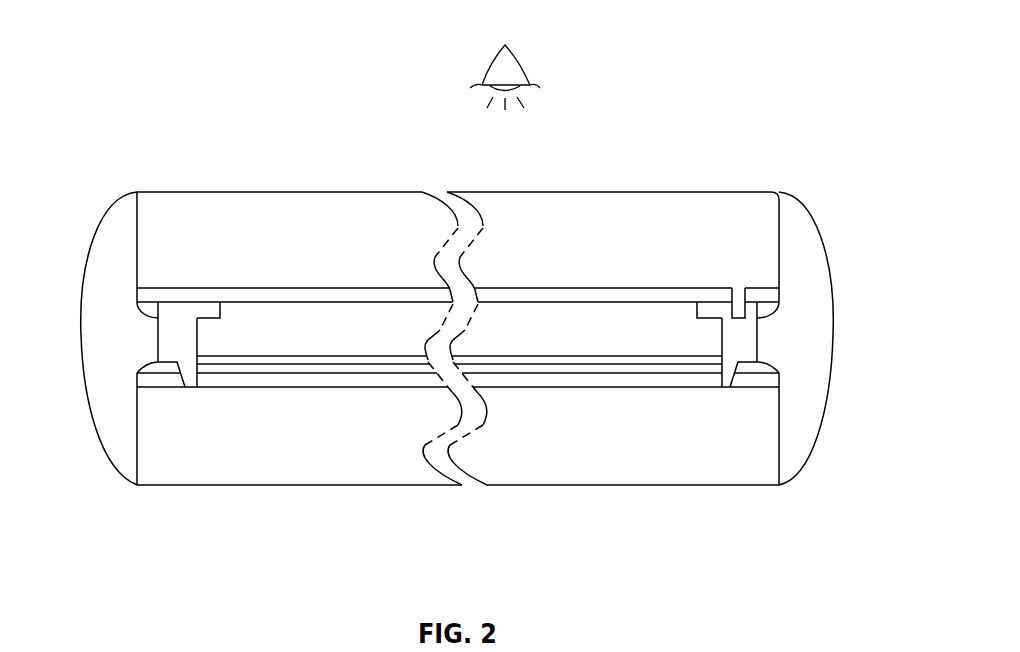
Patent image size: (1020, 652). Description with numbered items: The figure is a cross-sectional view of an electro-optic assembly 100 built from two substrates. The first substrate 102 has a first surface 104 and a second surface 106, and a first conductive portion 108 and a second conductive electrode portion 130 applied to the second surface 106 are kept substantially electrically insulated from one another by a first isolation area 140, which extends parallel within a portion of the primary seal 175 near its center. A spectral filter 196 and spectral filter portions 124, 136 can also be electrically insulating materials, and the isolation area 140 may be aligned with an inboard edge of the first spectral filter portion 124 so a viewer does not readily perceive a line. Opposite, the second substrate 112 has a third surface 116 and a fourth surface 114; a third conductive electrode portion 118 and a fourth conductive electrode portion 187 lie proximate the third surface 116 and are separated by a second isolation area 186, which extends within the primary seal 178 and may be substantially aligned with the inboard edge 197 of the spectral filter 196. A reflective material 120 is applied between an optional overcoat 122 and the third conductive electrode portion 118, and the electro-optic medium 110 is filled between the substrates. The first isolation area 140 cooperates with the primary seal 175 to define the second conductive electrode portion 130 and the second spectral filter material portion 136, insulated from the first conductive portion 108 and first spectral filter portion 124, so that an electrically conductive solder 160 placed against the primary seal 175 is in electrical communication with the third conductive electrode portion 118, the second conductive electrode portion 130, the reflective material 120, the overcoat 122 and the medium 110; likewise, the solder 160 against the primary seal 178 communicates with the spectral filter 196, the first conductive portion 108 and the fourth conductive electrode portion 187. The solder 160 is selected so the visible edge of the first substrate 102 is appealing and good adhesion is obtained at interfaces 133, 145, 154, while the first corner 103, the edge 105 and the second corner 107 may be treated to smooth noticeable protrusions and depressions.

The electro-optic assembly 100 is at (176, 79).
The first substrate 102 is at (611, 263).
The first corner 103 is at (137, 192).
The first surface 104 is at (556, 192).
The edge 105 is at (137, 242).
The second surface 106 is at (516, 288).
The second corner 107 is at (137, 295).
The first conductive portion 108 is at (497, 297).
The electro-optic medium 110 is at (381, 343).
The second substrate 112 is at (611, 443).
The fourth surface 114 is at (515, 485).
The third surface 116 is at (405, 387).
The third conductive electrode portion 118 is at (360, 380).
The reflective material 120 is at (308, 367).
The optional overcoat 122 is at (258, 357).
The first spectral filter portion 124 is at (722, 307).
The second conductive electrode portion 130 is at (755, 297).
The interface 133 is at (779, 225).
The second spectral filter material portion 136 is at (760, 302).
The first isolation area 140 is at (740, 288).
The interface 145 is at (758, 338).
The interface 154 is at (782, 378).
The electrically conductive solder 160 is at (100, 389).
The primary seal 175 is at (740, 348).
The primary seal 178 is at (190, 343).
The second isolation area 186 is at (183, 391).
The fourth conductive electrode portion 187 is at (157, 382).
The spectral filter 196 is at (203, 307).
The inboard edge 197 is at (222, 308).